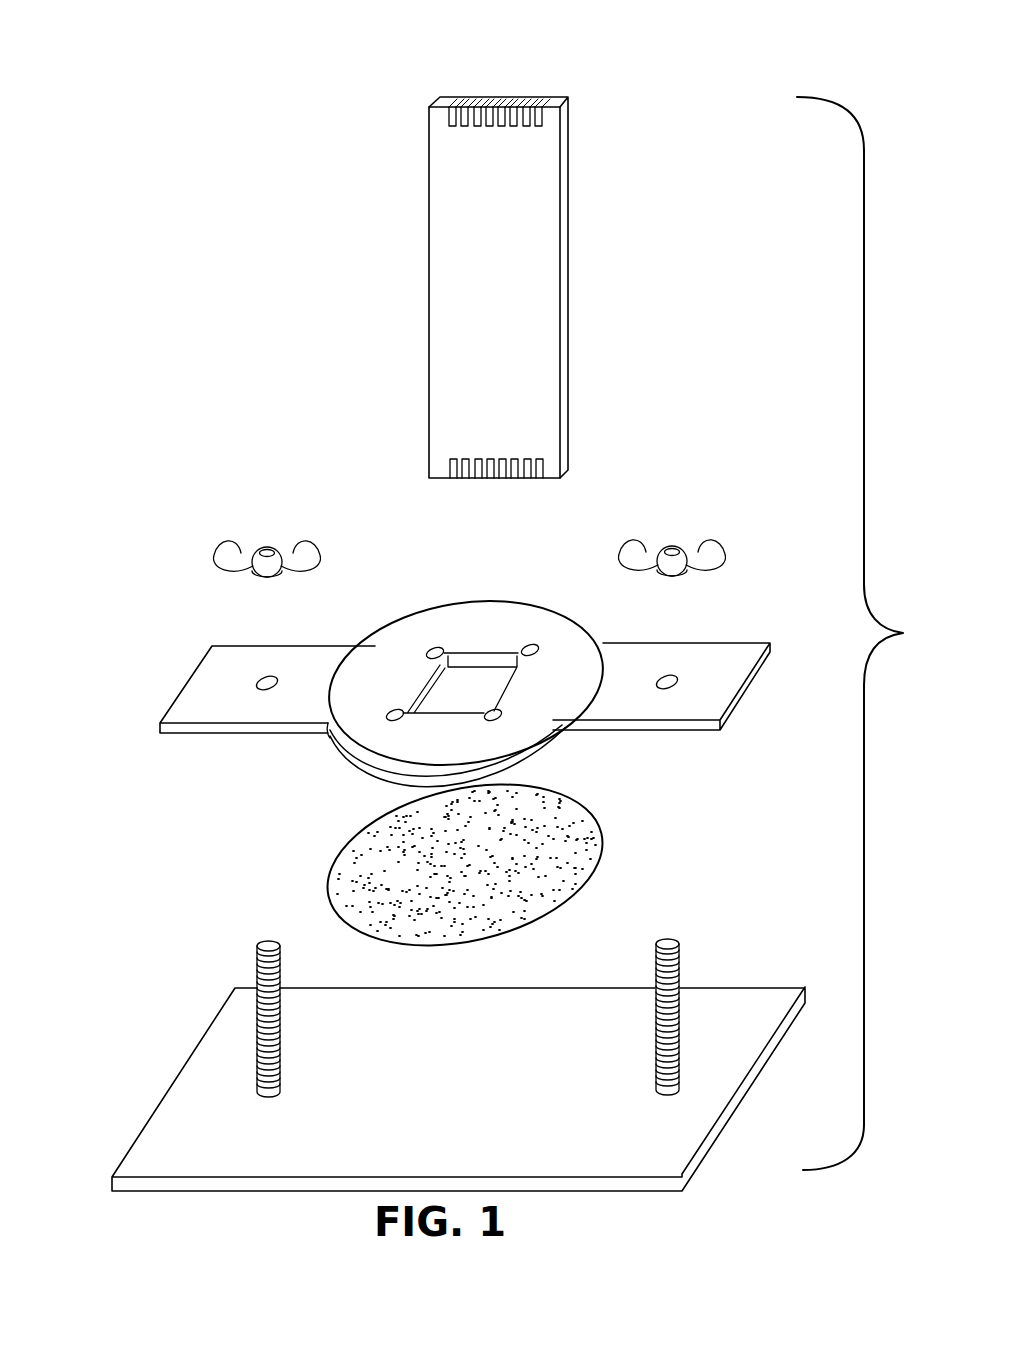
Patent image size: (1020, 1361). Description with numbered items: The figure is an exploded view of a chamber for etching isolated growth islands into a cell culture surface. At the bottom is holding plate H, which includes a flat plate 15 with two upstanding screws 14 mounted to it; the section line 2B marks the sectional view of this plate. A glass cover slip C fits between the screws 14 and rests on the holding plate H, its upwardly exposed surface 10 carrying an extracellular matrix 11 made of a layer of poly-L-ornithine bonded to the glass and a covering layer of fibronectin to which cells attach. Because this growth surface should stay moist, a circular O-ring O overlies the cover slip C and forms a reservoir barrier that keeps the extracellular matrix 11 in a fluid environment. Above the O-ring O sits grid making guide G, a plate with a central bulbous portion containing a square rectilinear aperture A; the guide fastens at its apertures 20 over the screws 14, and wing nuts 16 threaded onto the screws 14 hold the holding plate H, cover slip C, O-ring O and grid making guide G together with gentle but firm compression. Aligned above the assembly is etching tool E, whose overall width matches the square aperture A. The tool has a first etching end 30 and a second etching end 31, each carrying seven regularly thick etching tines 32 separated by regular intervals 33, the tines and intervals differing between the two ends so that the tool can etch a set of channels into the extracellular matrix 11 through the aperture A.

The first etching end 30 is at (517, 276).
The second etching end 31 is at (547, 249).
The etching tines 32 is at (547, 269).
The regular intervals 33 is at (502, 127).
The etching tool E is at (517, 276).
The wing nuts 16 is at (266, 549).
The grid making guide G is at (456, 672).
The apertures 20 is at (265, 677).
The rectilinear aperture A is at (469, 672).
The O-ring O is at (505, 765).
The cover slip C is at (481, 868).
The upwardly exposed surface 10 is at (504, 868).
The extracellular matrix 11 is at (430, 893).
The holding plate H is at (458, 1055).
The flat plate 15 is at (401, 1043).
The screws 14 is at (256, 972).
The section line 2B is at (60, 1120).